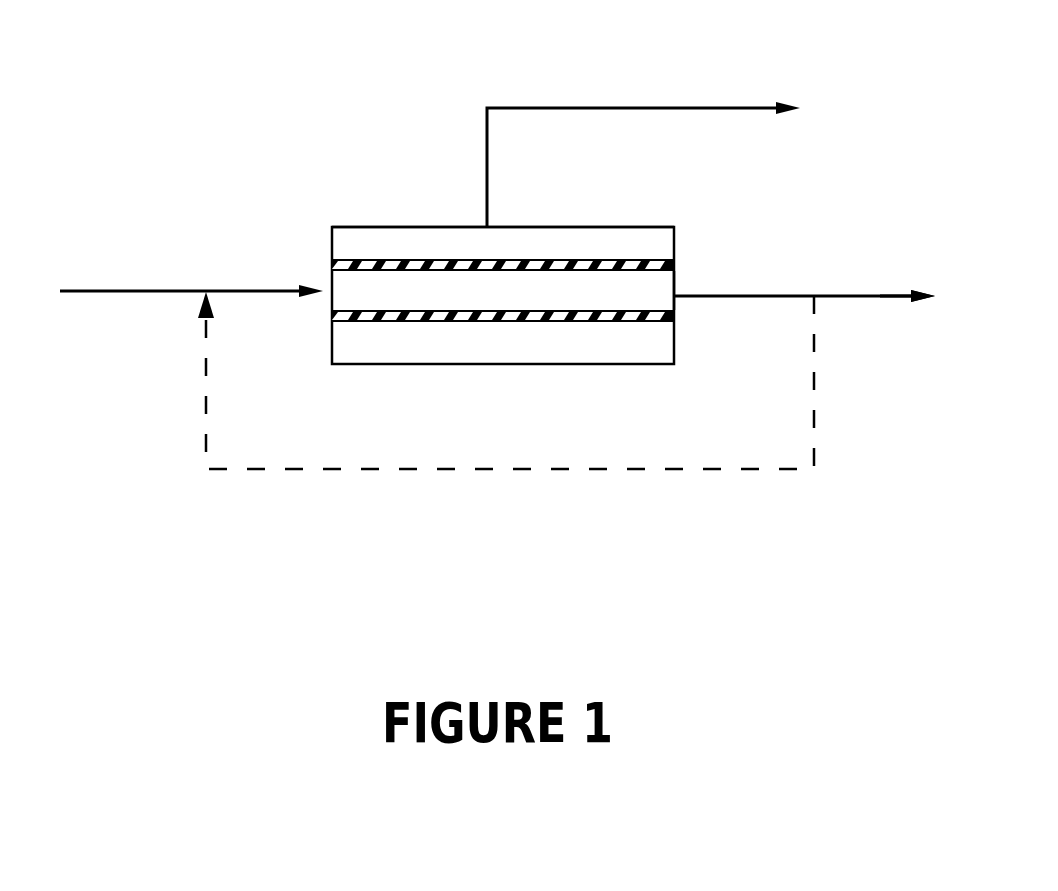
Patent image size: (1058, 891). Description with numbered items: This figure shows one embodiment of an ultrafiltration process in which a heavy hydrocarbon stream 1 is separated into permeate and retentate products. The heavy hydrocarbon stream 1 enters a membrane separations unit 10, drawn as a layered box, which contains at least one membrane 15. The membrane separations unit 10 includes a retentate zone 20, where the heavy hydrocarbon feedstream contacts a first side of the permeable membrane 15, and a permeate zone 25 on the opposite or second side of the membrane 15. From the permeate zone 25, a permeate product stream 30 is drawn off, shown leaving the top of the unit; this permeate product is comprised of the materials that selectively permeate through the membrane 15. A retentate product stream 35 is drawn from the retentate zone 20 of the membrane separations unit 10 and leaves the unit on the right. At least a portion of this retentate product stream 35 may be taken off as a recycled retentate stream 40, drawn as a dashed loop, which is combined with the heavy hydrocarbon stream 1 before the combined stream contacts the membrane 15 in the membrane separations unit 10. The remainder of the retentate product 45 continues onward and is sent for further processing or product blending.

The heavy hydrocarbon stream 1 is at (100, 277).
The membrane separations unit 10 is at (500, 375).
The membrane 15 is at (402, 258).
The retentate zone 20 is at (650, 293).
The permeate zone 25 is at (582, 227).
The permeate product stream 30 is at (622, 95).
The retentate product stream 35 is at (755, 287).
The recycled retentate stream 40 is at (740, 477).
The remainder of the retentate product 45 is at (870, 283).